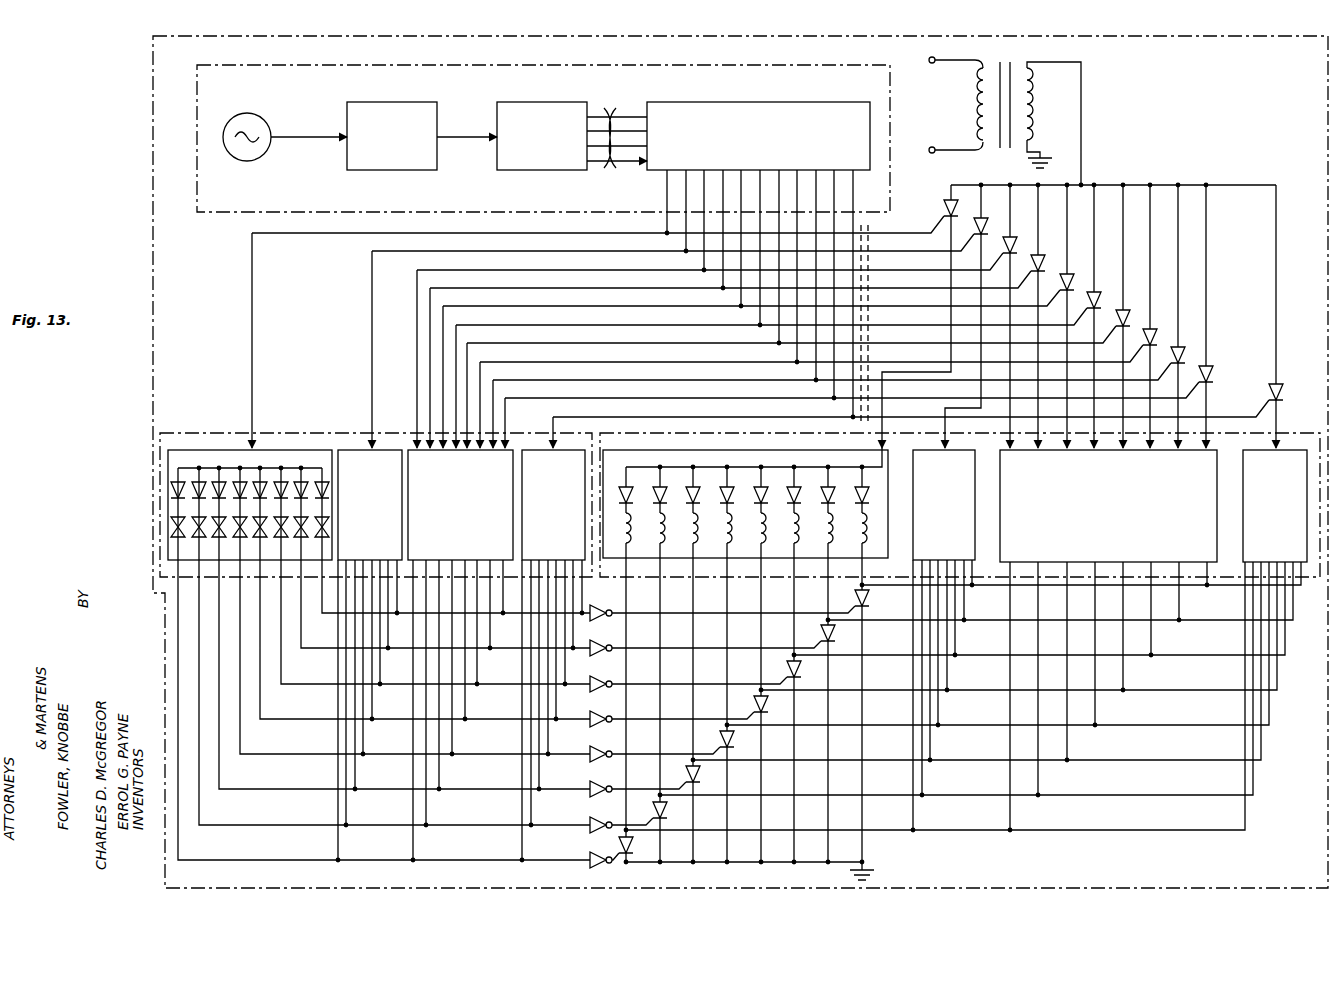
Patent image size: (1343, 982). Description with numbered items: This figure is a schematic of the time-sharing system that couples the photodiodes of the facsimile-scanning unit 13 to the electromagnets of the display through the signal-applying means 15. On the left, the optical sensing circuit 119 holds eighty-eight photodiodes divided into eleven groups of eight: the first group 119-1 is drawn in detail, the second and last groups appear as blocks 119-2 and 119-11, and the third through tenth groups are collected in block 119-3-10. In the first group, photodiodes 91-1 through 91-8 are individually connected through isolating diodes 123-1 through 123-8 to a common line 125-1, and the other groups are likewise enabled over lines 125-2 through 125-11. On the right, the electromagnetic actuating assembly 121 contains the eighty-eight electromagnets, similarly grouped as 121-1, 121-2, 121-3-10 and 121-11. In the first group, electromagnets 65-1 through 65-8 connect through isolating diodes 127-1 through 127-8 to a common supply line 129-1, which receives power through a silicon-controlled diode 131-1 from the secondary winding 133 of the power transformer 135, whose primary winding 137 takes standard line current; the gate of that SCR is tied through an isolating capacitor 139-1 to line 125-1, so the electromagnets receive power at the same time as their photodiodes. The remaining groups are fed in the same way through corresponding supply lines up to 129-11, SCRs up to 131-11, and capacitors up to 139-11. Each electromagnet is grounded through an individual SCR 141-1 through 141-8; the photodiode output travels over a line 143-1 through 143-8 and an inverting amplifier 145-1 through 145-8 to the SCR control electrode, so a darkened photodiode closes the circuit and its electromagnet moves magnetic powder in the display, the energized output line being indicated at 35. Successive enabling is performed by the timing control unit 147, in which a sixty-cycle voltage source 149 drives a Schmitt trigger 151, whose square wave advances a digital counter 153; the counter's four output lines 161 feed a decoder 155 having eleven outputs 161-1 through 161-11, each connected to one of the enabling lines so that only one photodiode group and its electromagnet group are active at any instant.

The facsimile-scanning unit 13 is at (150, 473).
The means for applying the electric signals 15 is at (150, 518).
The output line 35 is at (1310, 592).
The electromagnet 65-1 is at (631, 537).
The electromagnet 65-8 is at (858, 537).
The photodiode 91-1 is at (171, 529).
The photodiode 91-8 is at (329, 526).
The optical sensing circuit 119 is at (206, 430).
The first group of photodiodes 119-1 is at (270, 450).
The second group of photodiodes 119-2 is at (356, 450).
The third through tenth groups of photodiodes 119-3-10 is at (460, 656).
The eleventh group of photodiodes 119-11 is at (552, 656).
The electromagnetic actuating assembly 121 is at (1317, 430).
The first group of electromagnets 121-1 is at (886, 560).
The second group of electromagnets 121-2 is at (943, 641).
The third through tenth groups of electromagnets 121-3-10 is at (1108, 641).
The eleventh group of electromagnets 121-11 is at (1275, 506).
The isolating diode 123-1 is at (171, 490).
The isolating diode 123-8 is at (329, 491).
The common line 125-1 is at (253, 288).
The line 125-2 is at (372, 337).
The line 125-11 is at (553, 410).
The isolating diode 127-1 is at (622, 485).
The isolating diode 127-8 is at (855, 491).
The common supply line 129-1 is at (885, 439).
The common supply line 129-11 is at (1272, 443).
The silicon-controlled diode 131-1 is at (945, 201).
The silicon-controlled diode 131-11 is at (1270, 386).
The secondary winding 133 is at (1034, 110).
The power transformer 135 is at (1005, 111).
The primary winding 137 is at (976, 97).
The isolating capacitor 139-1 is at (868, 230).
The isolating capacitor 139-11 is at (1043, 334).
The silicon-controlled rectifier 141-1 is at (619, 847).
The silicon-controlled rectifier 141-8 is at (862, 600).
The output line 143-1 is at (197, 860).
The output line 143-8 is at (317, 618).
The inverting amplifier 145-1 is at (590, 868).
The inverting amplifier 145-8 is at (594, 612).
The timing control unit 147 is at (225, 65).
The voltage source 149 is at (255, 115).
The Schmitt trigger 151 is at (392, 102).
The digital counter 153 is at (542, 102).
The decoder 155 is at (750, 102).
The counter output lines 161 is at (610, 110).
The decoder output 161-1 is at (667, 183).
The decoder output 161-11 is at (876, 193).